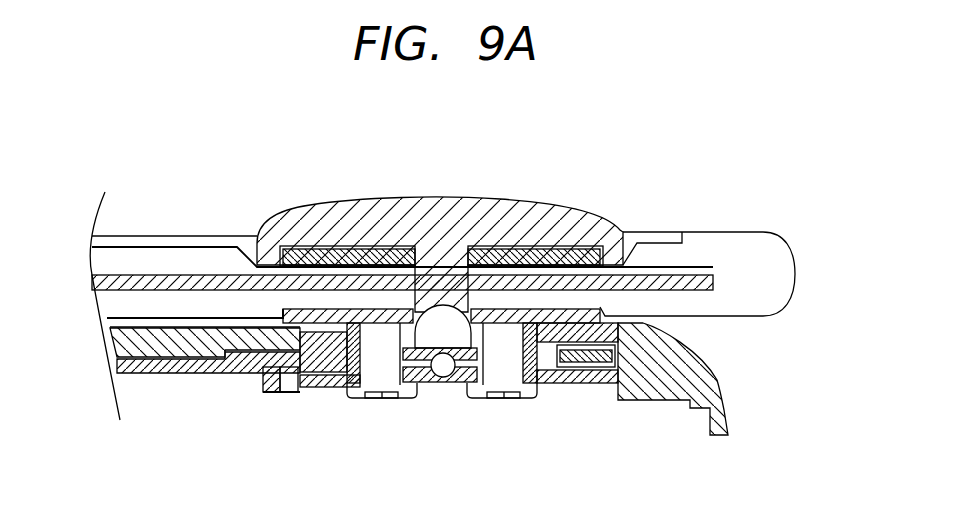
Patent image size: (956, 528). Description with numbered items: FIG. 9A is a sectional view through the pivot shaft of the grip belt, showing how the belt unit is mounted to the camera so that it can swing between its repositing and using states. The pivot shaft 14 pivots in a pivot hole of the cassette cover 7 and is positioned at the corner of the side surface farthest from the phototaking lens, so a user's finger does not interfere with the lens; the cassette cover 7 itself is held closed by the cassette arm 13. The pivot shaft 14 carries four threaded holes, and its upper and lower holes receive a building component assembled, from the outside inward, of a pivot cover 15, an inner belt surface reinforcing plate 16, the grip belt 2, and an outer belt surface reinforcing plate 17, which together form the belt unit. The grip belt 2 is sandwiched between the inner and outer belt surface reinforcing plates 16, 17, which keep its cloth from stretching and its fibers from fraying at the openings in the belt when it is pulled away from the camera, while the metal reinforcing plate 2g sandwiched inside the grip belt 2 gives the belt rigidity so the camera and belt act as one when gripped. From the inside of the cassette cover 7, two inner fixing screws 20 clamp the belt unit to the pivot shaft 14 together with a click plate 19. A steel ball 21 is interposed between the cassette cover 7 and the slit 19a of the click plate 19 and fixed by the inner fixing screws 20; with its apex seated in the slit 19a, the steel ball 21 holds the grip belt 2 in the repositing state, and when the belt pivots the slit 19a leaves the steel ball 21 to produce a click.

The grip belt 2 is at (210, 211).
The metal reinforcing plate 2g is at (712, 272).
The cassette cover 7 is at (658, 385).
The cassette arm 13 is at (173, 373).
The pivot shaft 14 is at (537, 387).
The pivot cover 15 is at (337, 208).
The inner belt surface reinforcing plate 16 is at (580, 247).
The outer belt surface reinforcing plate 17 is at (303, 318).
The click plate 19 is at (317, 388).
The slit 19a is at (450, 380).
The inner fixing screws 20 is at (373, 378).
The steel ball 21 is at (440, 378).